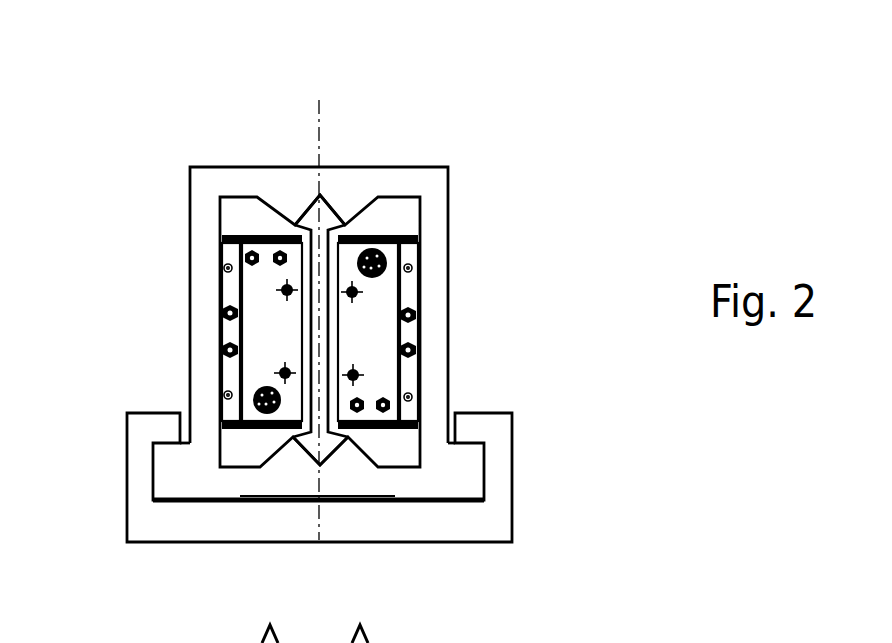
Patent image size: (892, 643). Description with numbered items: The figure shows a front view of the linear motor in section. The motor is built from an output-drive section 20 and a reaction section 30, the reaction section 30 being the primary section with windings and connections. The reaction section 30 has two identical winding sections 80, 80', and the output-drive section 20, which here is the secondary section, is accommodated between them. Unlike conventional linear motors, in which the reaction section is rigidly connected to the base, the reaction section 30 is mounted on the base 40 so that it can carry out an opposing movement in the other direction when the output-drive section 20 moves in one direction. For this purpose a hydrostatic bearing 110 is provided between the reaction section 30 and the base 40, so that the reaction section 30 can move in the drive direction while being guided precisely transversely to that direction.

The output-drive section 20 is at (322, 197).
The reaction section 30 is at (432, 245).
The base 40 is at (492, 530).
The winding section 80 is at (443, 332).
The winding section 80' is at (195, 332).
The hydrostatic bearing 110 is at (182, 503).